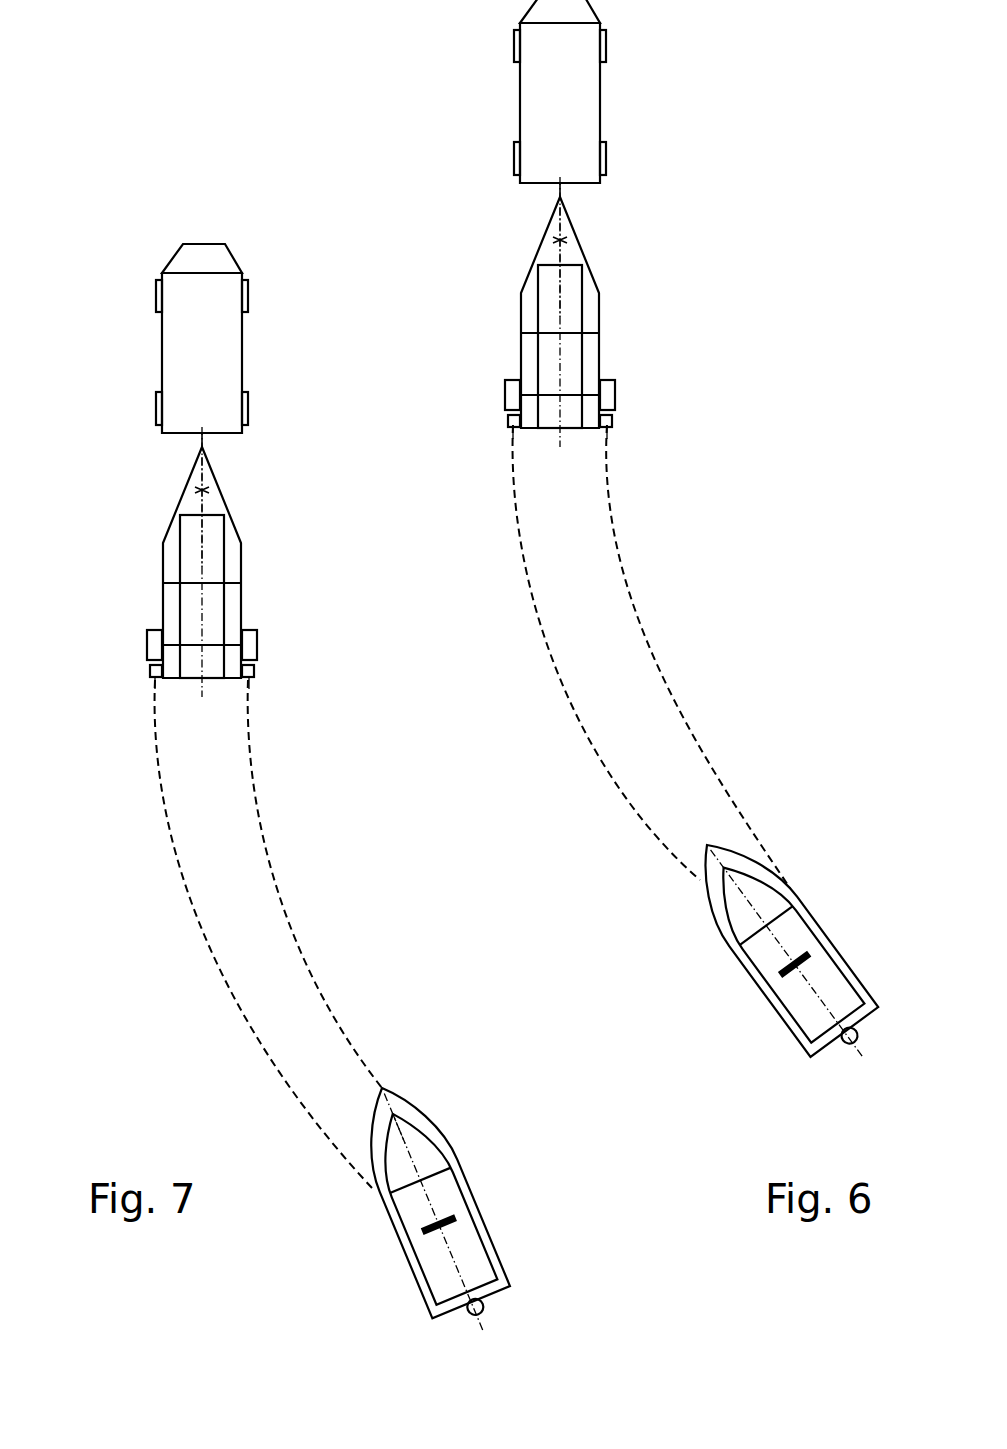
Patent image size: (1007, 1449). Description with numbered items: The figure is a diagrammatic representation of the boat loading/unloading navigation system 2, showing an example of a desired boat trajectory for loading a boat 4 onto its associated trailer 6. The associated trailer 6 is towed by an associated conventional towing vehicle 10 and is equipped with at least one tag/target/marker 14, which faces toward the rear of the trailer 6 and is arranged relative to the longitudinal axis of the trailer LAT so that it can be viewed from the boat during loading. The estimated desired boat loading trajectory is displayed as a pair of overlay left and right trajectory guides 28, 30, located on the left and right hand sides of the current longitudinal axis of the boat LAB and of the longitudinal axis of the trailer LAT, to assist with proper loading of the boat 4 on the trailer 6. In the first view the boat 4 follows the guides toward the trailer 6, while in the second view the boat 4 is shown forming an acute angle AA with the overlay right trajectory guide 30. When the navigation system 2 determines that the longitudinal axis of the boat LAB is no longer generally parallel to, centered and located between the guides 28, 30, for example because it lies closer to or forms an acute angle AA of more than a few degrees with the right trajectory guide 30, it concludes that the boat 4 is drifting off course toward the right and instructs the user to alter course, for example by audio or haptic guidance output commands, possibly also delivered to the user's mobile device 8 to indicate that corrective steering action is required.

In FIG. 7, the boat loading/unloading navigation system 2 is at (92, 238).
In FIG. 6, the boat loading/unloading navigation system 2 is at (410, 157).
In FIG. 7, the boat 4 is at (413, 1217).
In FIG. 6, the boat 4 is at (771, 959).
In FIG. 7, the associated trailer 6 is at (243, 570).
In FIG. 6, the associated trailer 6 is at (602, 347).
In FIG. 7, the mobile device 8 is at (452, 1223).
In FIG. 6, the mobile device 8 is at (793, 955).
In FIG. 7, the associated towing vehicle 10 is at (246, 362).
In FIG. 6, the associated towing vehicle 10 is at (606, 115).
In FIG. 7, the tag/target/marker 14 is at (192, 492).
In FIG. 6, the tag/target/marker 14 is at (563, 235).
In FIG. 7, the overlay left trajectory guide 28 is at (237, 1003).
In FIG. 6, the overlay left trajectory guide 28 is at (623, 798).
In FIG. 7, the overlay right trajectory guide 30 is at (310, 977).
In FIG. 6, the overlay right trajectory guide 30 is at (706, 753).
In FIG. 7, the longitudinal axis of the trailer LAT is at (200, 502).
In FIG. 6, the longitudinal axis of the trailer LAT is at (542, 243).
In FIG. 7, the longitudinal axis of the boat LAB is at (443, 1234).
In FIG. 6, the longitudinal axis of the boat LAB is at (812, 987).
In FIG. 7, the acute angle AA is at (413, 1152).